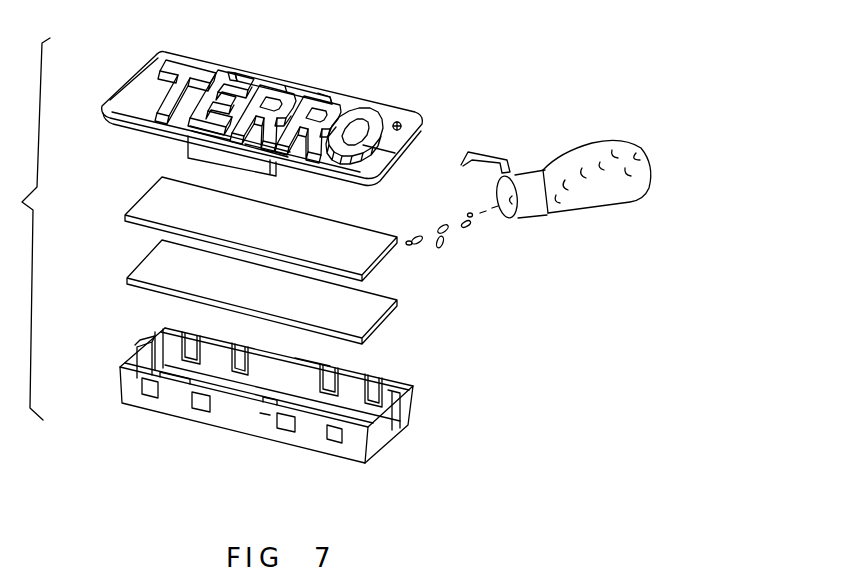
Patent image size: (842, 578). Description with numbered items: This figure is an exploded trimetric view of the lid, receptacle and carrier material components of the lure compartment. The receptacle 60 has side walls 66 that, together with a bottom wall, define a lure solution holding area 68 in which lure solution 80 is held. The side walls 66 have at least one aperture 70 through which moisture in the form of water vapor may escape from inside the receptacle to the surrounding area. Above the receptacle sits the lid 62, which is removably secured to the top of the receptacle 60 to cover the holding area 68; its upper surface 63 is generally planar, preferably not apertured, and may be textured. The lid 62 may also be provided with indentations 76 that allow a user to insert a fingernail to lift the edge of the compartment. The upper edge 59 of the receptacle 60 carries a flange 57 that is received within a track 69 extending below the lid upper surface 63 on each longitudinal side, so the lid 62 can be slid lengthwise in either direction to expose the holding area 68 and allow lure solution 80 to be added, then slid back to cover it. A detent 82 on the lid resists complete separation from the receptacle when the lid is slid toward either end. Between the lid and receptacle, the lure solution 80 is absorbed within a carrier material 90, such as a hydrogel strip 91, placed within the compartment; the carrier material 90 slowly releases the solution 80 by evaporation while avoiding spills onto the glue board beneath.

The lid 62 is at (411, 105).
The upper surface 63 is at (237, 82).
The detent 82 is at (287, 90).
The indentations 76 is at (323, 97).
The track 69 is at (287, 163).
The hydrogel strip 91 is at (242, 222).
The carrier material 90 is at (297, 260).
The lure solution 80 is at (627, 183).
The receptacle 60 is at (267, 380).
The side walls 66 is at (308, 433).
The lure solution holding area 68 is at (347, 415).
The aperture 70 is at (157, 343).
The upper edge 59 is at (178, 320).
The flange 57 is at (264, 413).